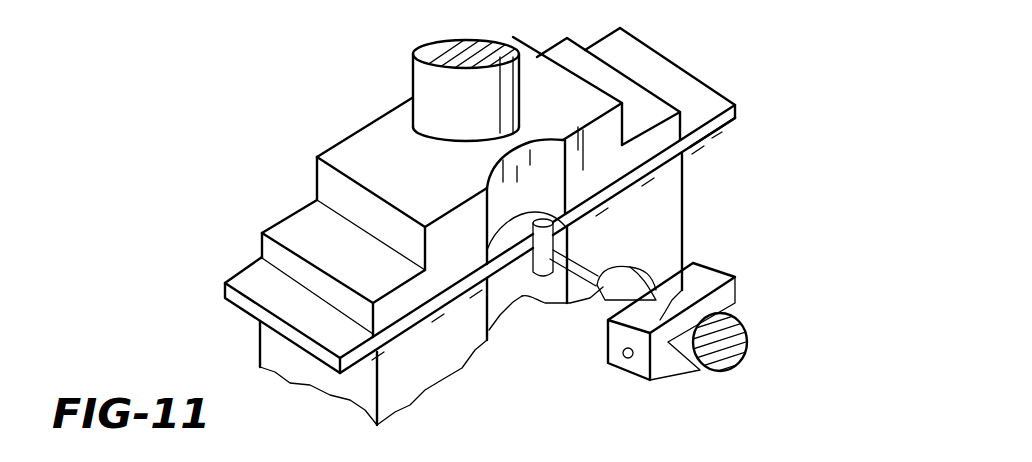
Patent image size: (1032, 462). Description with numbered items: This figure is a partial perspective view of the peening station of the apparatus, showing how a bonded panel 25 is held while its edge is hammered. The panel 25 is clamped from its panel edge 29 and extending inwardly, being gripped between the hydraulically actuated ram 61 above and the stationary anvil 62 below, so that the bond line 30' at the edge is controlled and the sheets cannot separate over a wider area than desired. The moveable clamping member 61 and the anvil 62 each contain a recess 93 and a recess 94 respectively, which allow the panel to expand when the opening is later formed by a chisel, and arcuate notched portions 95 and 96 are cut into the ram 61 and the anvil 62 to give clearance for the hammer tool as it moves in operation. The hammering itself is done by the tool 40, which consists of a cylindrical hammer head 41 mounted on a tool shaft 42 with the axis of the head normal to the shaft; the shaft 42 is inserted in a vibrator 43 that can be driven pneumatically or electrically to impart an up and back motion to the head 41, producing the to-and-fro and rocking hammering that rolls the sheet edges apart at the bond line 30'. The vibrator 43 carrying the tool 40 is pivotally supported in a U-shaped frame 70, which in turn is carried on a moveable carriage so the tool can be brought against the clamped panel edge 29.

The panel 25 is at (692, 88).
The panel edge 29 is at (720, 132).
The bond line 30' is at (562, 246).
The hammering tool 40 is at (547, 284).
The cylindrical hammer head 41 is at (578, 216).
The tool shaft 42 is at (585, 257).
The vibrator 43 is at (733, 305).
The hydraulically actuated ram 61 is at (385, 137).
The stationary anvil 62 is at (408, 392).
The U-shaped frame 70 is at (708, 278).
The recess 93 is at (513, 233).
The recess 94 is at (500, 282).
The arcuate notched portion 95 is at (540, 165).
The arcuate notched portion 96 is at (525, 298).